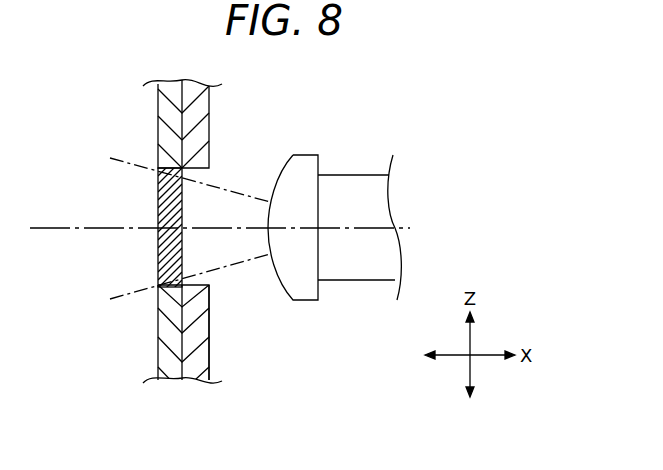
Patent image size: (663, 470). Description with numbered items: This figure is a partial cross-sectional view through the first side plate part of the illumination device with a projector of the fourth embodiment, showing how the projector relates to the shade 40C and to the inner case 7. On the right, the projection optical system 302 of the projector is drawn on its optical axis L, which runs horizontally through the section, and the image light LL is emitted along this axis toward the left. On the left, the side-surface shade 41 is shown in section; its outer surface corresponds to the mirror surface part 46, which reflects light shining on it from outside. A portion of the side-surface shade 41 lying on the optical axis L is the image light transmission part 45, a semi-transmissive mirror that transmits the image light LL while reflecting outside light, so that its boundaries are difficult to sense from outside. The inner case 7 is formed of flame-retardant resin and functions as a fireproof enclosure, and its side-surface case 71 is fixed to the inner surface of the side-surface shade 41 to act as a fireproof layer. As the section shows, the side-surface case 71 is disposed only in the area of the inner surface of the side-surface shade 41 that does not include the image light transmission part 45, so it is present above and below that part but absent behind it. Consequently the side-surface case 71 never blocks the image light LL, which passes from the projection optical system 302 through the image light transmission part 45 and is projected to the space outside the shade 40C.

The projection optical system 302 is at (337, 158).
The image light transmission part 45 is at (158, 245).
The mirror surface part 46 is at (158, 314).
The side-surface case 71 is at (210, 325).
The inner case 7 is at (210, 352).
The side-surface shade 41 is at (121, 389).
The shade 40C is at (160, 337).
The optical axis L is at (220, 216).
The image light LL is at (125, 160).